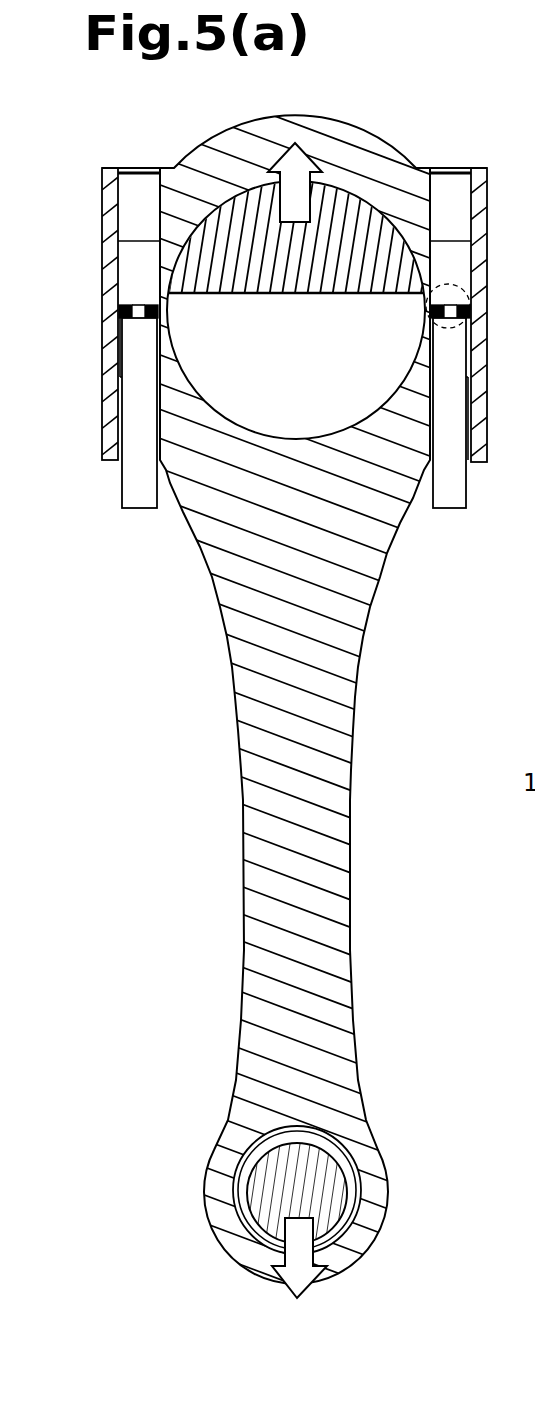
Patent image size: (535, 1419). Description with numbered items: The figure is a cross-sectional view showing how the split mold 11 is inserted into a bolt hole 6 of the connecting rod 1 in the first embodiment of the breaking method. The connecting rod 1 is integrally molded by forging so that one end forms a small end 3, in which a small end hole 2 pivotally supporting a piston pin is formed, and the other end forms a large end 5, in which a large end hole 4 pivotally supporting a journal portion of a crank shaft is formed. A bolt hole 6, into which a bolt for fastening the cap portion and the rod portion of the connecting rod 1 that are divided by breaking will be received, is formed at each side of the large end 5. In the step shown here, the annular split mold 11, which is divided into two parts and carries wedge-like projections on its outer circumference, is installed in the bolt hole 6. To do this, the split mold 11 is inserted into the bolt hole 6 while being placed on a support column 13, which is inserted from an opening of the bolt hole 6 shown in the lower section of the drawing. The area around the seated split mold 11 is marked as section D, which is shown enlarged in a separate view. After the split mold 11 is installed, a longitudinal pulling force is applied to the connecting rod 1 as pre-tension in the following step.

The connecting rod 1 is at (102, 198).
The small end hole 2 is at (252, 1158).
The small end 3 is at (372, 1248).
The large end hole 4 is at (382, 407).
The large end 5 is at (347, 121).
The bolt hole 6 is at (118, 279).
The split mold 11 is at (449, 270).
The support column 13 is at (122, 482).
The section D is at (489, 320).